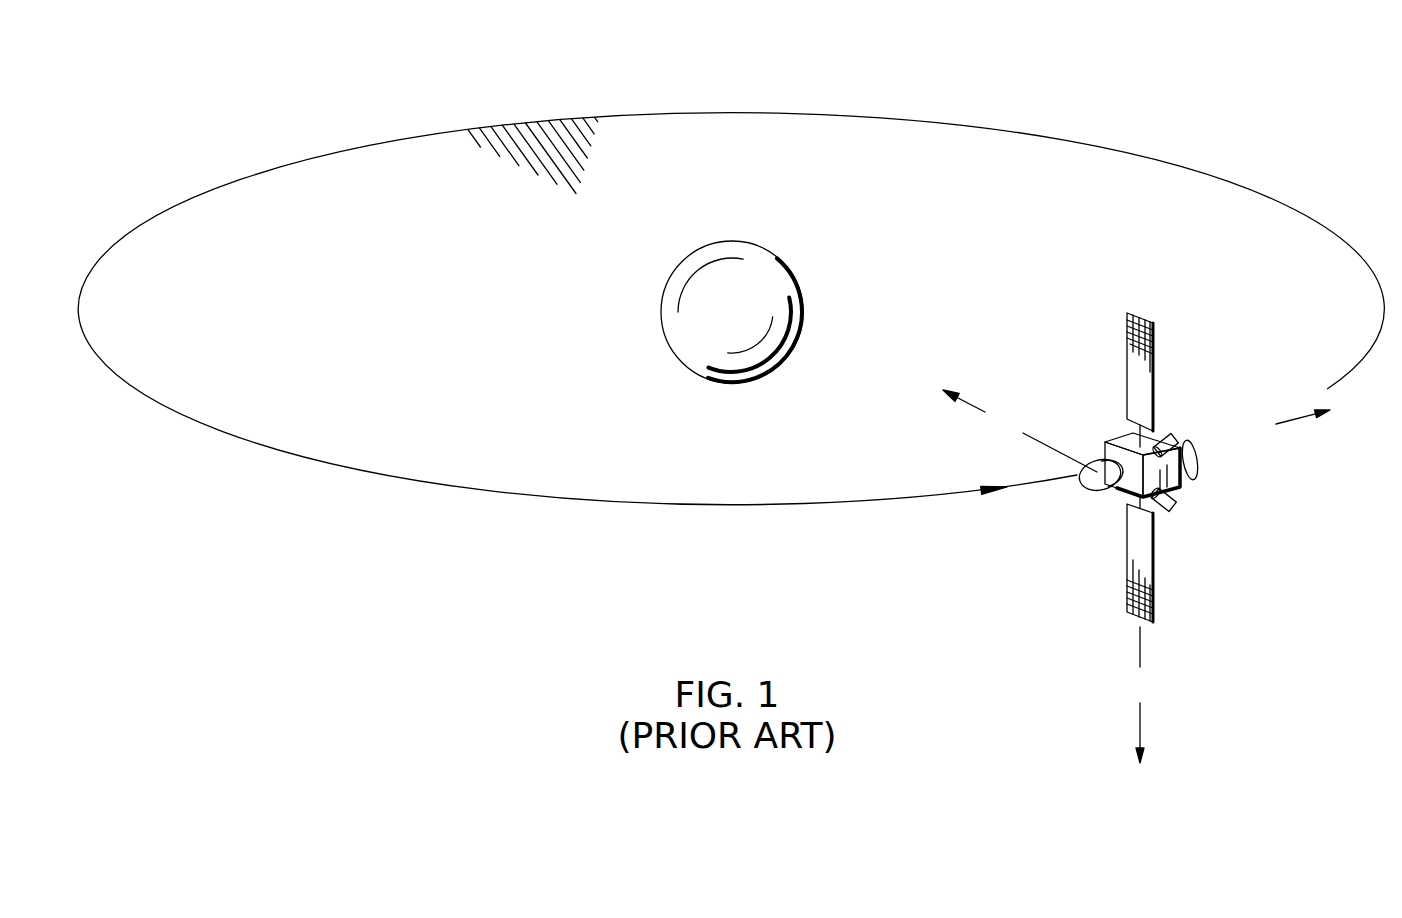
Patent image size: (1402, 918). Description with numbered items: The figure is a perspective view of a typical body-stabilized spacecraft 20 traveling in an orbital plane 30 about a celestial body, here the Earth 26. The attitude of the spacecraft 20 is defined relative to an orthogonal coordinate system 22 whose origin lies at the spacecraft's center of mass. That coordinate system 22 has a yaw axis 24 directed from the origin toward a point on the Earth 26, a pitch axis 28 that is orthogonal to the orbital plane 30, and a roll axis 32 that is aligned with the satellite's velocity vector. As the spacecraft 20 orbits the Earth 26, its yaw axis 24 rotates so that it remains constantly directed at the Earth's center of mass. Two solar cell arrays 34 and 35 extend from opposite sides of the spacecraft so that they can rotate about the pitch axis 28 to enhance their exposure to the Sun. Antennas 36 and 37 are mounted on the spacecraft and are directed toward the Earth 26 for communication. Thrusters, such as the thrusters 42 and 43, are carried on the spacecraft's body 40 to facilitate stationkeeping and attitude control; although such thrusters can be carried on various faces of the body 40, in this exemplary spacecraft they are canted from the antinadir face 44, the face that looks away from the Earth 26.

The body-stabilized spacecraft 20 is at (1083, 478).
The orthogonal coordinate system 22 is at (1124, 655).
The yaw axis 24 is at (1020, 431).
The Earth 26 is at (707, 243).
The pitch axis 28 is at (1142, 718).
The orbital plane 30 is at (541, 140).
The roll axis 32 is at (1193, 447).
The solar cell array 34 is at (1133, 345).
The solar cell array 35 is at (1130, 598).
The antenna 36 is at (1094, 468).
The antenna 37 is at (1198, 458).
The spacecraft body 40 is at (1116, 432).
The thruster 42 is at (1180, 440).
The thruster 43 is at (1178, 507).
The antinadir face 44 is at (1180, 468).